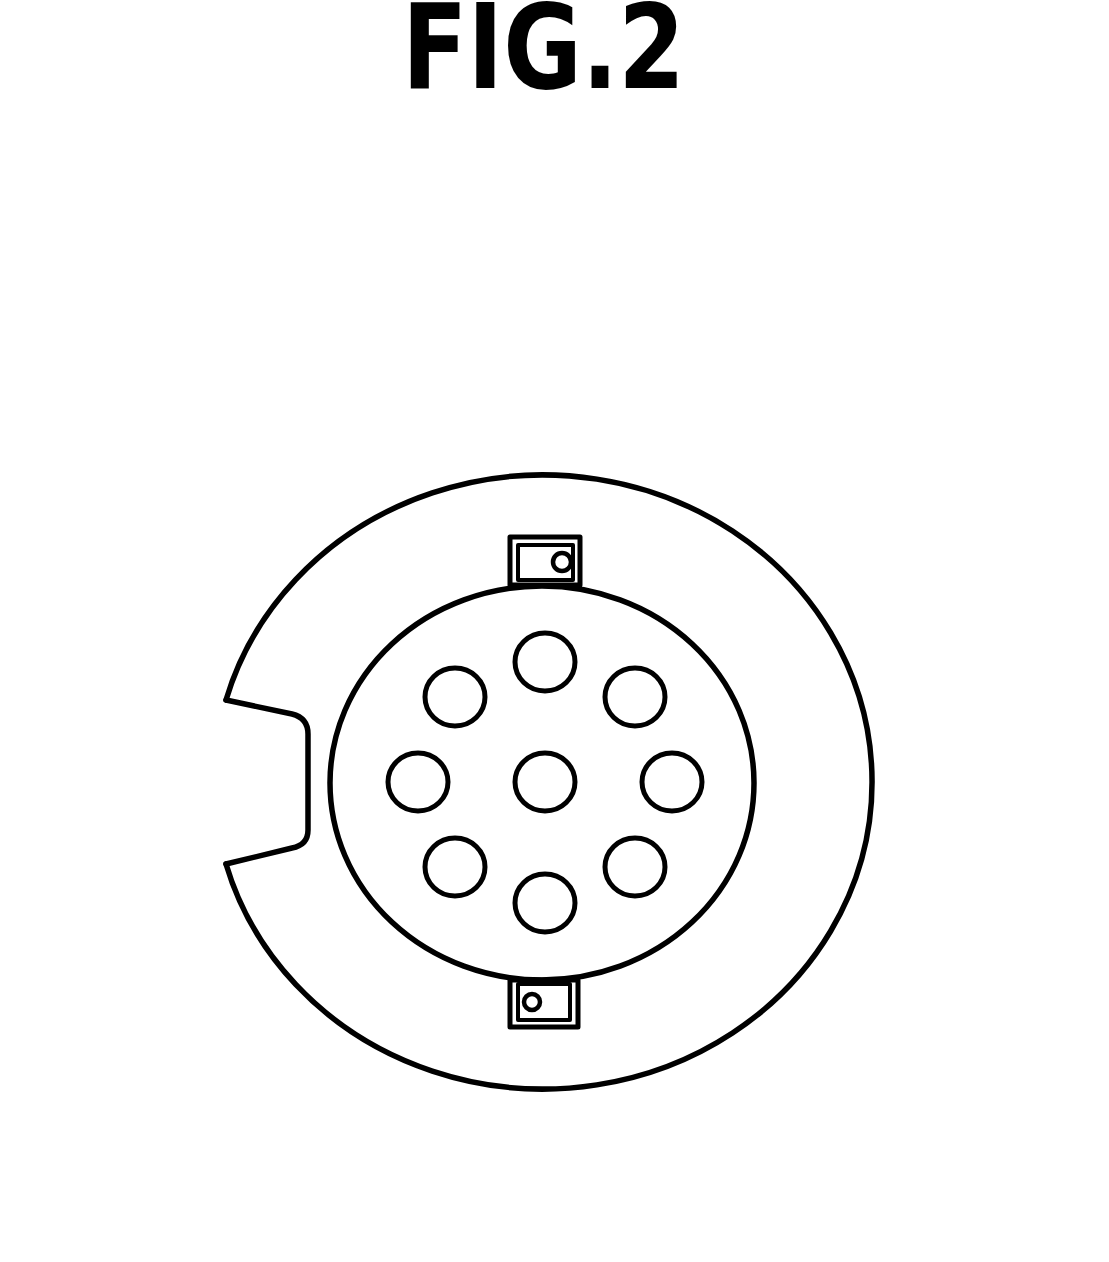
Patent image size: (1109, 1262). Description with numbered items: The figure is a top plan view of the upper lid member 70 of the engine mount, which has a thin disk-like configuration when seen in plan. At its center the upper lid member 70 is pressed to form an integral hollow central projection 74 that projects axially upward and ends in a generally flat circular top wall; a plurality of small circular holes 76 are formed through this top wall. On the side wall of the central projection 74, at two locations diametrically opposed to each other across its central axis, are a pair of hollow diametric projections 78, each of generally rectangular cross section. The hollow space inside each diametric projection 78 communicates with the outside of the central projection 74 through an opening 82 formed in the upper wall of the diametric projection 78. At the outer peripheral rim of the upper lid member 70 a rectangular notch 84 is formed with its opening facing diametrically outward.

The upper lid member 70 is at (776, 474).
The central projection 74 is at (403, 893).
The small circular holes 76 is at (692, 777).
The diametric projections 78 is at (537, 538).
The opening 82 is at (556, 552).
The notch 84 is at (268, 848).